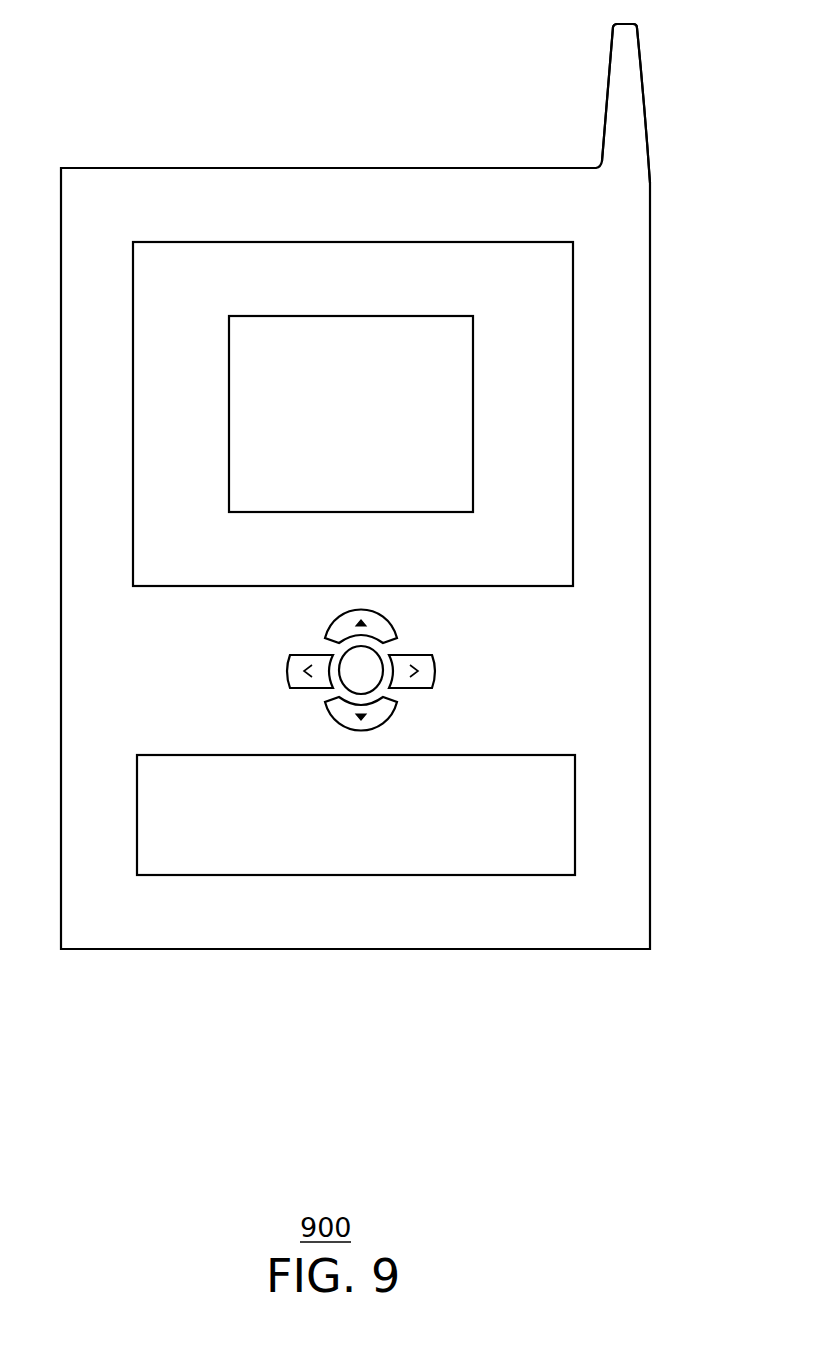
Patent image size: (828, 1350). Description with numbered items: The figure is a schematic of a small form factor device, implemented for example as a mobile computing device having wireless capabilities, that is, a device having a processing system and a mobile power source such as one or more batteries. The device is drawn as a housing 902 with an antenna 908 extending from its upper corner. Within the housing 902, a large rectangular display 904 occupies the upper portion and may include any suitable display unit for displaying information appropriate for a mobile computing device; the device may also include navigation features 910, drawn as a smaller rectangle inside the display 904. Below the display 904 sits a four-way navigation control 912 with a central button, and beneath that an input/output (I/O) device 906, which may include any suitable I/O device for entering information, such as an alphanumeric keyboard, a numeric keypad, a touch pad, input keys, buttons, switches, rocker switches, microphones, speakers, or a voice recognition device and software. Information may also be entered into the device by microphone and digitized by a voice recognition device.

The housing 902 is at (649, 543).
The display 904 is at (508, 242).
The input/output (I/O) device 906 is at (575, 785).
The antenna 908 is at (609, 72).
The navigation features 910 is at (413, 316).
The navigation keys 912 is at (450, 662).